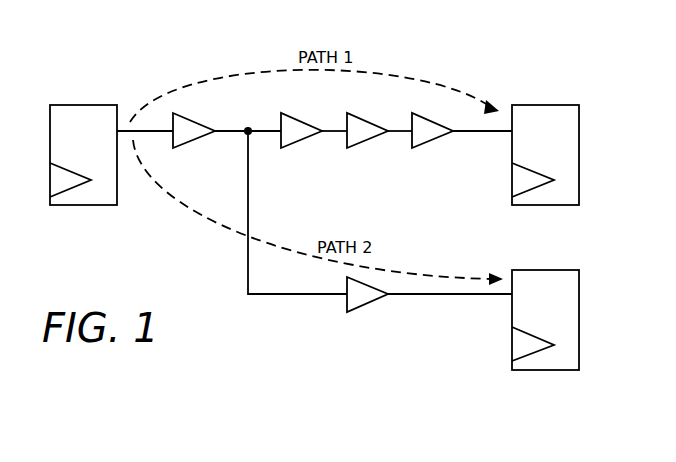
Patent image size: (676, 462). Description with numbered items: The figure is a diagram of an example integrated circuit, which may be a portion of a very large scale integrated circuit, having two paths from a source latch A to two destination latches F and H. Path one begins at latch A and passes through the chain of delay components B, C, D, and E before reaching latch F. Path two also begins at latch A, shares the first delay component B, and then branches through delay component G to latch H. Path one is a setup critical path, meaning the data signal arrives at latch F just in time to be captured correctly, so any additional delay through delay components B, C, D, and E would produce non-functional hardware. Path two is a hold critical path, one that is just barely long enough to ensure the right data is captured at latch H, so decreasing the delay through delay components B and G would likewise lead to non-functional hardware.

The latch A is at (83, 141).
The delay component B is at (194, 122).
The delay component C is at (301, 122).
The delay component D is at (367, 122).
The delay component E is at (432, 122).
The latch F is at (545, 141).
The delay component G is at (367, 304).
The latch H is at (545, 306).